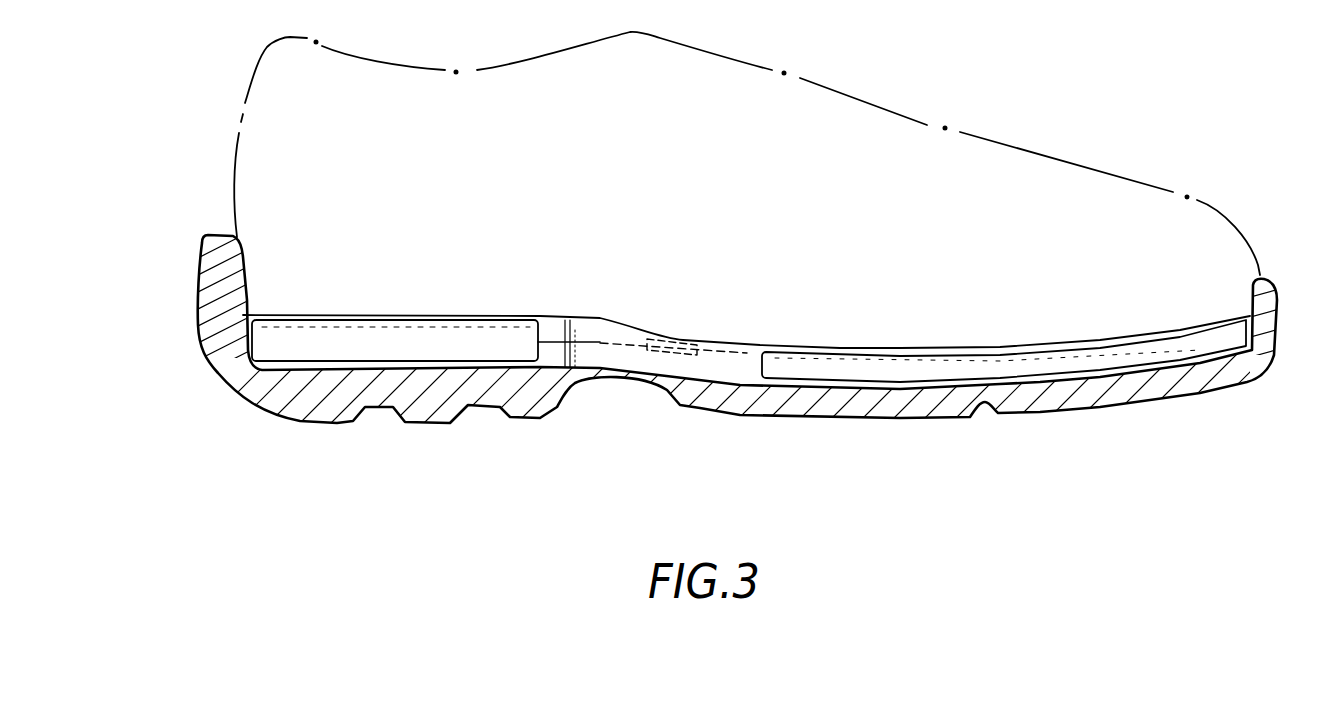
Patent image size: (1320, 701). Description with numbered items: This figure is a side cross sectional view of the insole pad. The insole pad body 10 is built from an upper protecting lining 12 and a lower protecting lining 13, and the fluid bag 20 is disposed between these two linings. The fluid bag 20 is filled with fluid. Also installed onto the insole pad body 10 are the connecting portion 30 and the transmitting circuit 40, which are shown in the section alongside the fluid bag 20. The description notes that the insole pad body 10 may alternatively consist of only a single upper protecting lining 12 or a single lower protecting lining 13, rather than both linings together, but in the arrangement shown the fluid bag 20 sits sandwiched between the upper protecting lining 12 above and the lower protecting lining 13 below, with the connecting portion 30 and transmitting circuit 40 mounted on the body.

The insole pad body 10 is at (903, 302).
The upper protecting lining 12 is at (1037, 345).
The lower protecting lining 13 is at (442, 365).
The fluid bag 20 is at (407, 343).
The connecting portion 30 is at (667, 352).
The transmitting circuit 40 is at (610, 353).